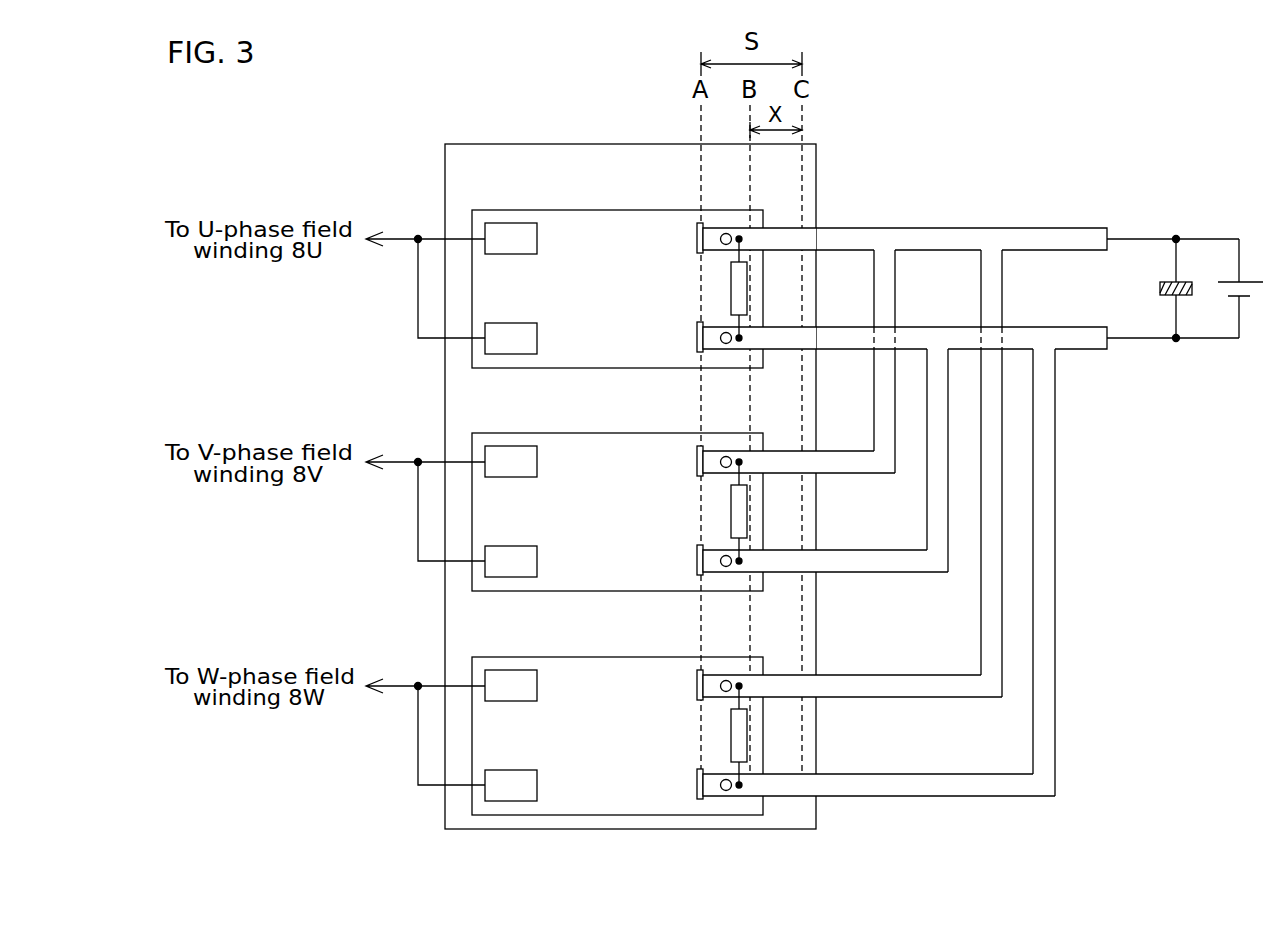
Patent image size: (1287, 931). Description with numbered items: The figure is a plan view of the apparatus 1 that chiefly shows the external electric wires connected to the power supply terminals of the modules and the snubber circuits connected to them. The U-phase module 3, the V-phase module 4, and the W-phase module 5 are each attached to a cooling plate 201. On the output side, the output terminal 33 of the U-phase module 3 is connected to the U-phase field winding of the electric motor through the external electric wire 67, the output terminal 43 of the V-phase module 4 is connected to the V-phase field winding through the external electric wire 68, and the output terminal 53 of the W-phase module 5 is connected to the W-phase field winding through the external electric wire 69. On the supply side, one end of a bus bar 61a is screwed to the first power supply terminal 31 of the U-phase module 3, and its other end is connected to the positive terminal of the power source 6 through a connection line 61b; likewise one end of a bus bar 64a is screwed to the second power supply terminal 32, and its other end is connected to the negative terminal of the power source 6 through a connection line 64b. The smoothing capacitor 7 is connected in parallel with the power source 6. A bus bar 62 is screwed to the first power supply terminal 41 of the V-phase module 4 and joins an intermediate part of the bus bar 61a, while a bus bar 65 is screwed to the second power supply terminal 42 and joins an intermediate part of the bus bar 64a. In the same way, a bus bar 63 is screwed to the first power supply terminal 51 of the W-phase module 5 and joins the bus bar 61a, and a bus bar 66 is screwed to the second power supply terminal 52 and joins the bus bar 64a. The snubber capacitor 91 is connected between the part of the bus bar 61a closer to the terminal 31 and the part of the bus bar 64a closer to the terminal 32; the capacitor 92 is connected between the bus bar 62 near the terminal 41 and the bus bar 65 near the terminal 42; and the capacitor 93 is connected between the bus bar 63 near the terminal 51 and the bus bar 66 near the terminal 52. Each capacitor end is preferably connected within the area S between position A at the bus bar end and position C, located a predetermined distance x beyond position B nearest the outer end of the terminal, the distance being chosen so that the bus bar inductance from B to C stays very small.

The power converter 1 is at (941, 178).
The cooling plate 201 is at (497, 143).
The U-phase module 3 is at (593, 209).
The V-phase module 4 is at (593, 432).
The W-phase module 5 is at (593, 656).
The output terminal 33 is at (538, 247).
The output terminal 43 is at (538, 470).
The output terminal 53 is at (538, 694).
The first power supply terminal 31 is at (697, 239).
The second power supply terminal 32 is at (697, 338).
The first power supply terminal 41 is at (697, 462).
The second power supply terminal 42 is at (697, 561).
The first power supply terminal 51 is at (697, 685).
The second power supply terminal 52 is at (697, 785).
The capacitor 91 is at (731, 289).
The capacitor 92 is at (731, 510).
The capacitor 93 is at (731, 735).
The bus bar 61a is at (1050, 228).
The connection line 61b is at (1212, 238).
The bus bar 64a is at (1078, 350).
The connection line 64b is at (1212, 340).
The bus bar 62 is at (838, 451).
The bus bar 63 is at (840, 674).
The bus bar 65 is at (897, 573).
The bus bar 66 is at (932, 774).
The external electric wire 67 is at (403, 236).
The external electric wire 68 is at (403, 459).
The external electric wire 69 is at (403, 683).
The power source 6 is at (1252, 282).
The smoothing capacitor 7 is at (1168, 282).